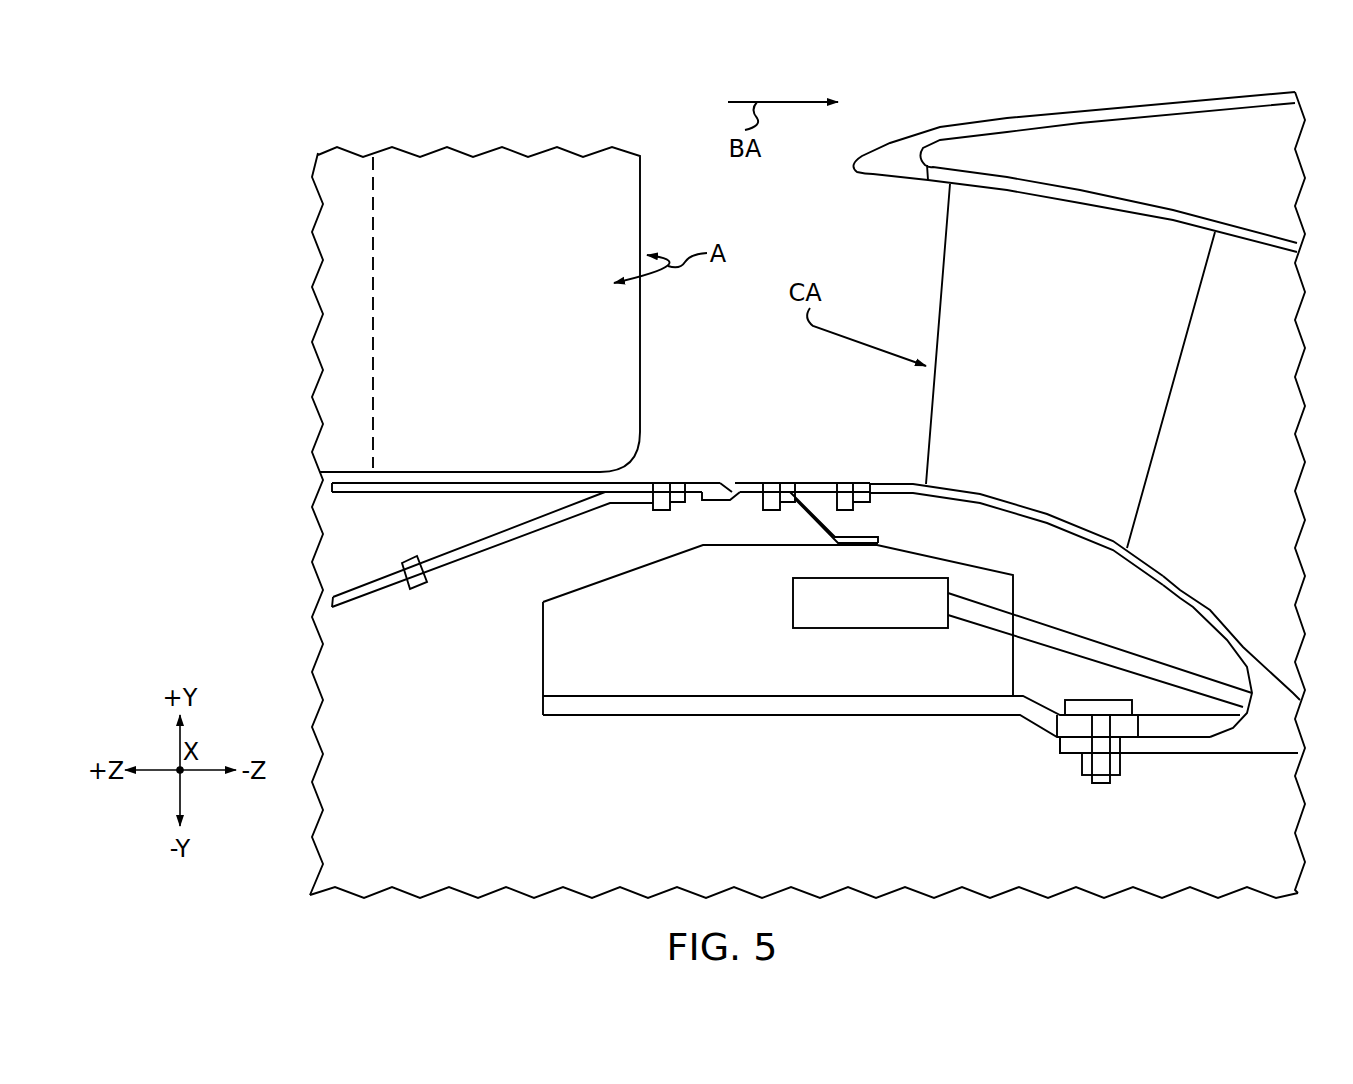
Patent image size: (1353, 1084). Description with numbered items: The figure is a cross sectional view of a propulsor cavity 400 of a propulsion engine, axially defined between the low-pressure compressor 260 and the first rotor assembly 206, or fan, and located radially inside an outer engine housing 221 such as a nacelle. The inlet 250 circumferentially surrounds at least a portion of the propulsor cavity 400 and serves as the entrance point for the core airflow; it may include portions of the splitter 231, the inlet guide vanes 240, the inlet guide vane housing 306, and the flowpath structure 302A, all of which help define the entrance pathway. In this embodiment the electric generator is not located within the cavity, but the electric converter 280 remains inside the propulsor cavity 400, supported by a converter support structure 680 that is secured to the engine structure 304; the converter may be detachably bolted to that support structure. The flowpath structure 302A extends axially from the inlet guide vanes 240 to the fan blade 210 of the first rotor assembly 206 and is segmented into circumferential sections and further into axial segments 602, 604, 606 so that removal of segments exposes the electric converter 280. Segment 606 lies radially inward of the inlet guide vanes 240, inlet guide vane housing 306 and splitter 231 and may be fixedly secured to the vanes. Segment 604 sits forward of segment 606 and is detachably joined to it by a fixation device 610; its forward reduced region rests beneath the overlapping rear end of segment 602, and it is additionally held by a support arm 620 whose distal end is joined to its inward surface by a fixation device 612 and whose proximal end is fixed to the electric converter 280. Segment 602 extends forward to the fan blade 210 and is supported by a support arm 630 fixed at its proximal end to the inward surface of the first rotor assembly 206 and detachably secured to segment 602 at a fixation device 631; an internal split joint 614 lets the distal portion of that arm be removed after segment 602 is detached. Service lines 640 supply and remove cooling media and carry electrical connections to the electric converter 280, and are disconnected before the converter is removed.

The first rotor assembly 206 is at (505, 256).
The fan blade 210 is at (328, 238).
The outer engine housing 221 is at (711, 419).
The splitter 231 is at (1058, 120).
The inlet guide vanes 240 is at (948, 297).
The inlet 250 is at (1039, 492).
The low-pressure compressor 260 is at (1193, 557).
The electric converter 280 is at (687, 678).
The flowpath structure 302A is at (829, 423).
The engine structure 304 is at (1192, 746).
The inlet guide vane housing 306 is at (1019, 180).
The propulsor cavity 400 is at (427, 567).
The segment 602 is at (555, 483).
The segment 604 is at (793, 481).
The segment 606 is at (1012, 505).
The fixation device 610 is at (848, 483).
The fixation device 612 is at (765, 483).
The split joint 614 is at (418, 585).
The support arm 620 is at (853, 545).
The support arm 630 is at (478, 548).
The fixation device 631 is at (660, 483).
The service lines 640 is at (795, 604).
The converter support structure 680 is at (872, 706).